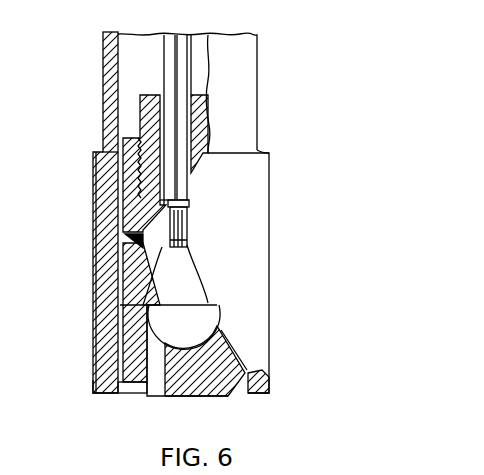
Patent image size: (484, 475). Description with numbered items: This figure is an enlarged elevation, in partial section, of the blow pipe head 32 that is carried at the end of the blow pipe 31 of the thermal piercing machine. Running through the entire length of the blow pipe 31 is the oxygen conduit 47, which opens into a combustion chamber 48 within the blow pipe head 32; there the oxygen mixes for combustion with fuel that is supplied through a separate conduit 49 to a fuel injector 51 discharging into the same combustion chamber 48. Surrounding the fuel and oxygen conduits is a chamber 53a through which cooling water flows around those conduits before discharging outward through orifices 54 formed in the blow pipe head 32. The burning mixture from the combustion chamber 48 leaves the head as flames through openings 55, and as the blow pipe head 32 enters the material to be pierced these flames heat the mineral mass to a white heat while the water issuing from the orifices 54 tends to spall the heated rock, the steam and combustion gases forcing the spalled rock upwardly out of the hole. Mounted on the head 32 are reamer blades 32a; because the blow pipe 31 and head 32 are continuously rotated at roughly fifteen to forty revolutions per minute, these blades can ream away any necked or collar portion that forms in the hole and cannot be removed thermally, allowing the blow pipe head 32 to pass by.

The chamber 53a is at (122, 67).
The blow pipe 31 is at (248, 65).
The blow pipe head 32 is at (252, 207).
The reamer blades 32a is at (92, 391).
The conduit 47 is at (143, 135).
The conduit 49 is at (195, 173).
The fuel injector 51 is at (178, 238).
The combustion chamber 48 is at (195, 285).
The orifices 54 is at (120, 385).
The openings 55 is at (232, 398).